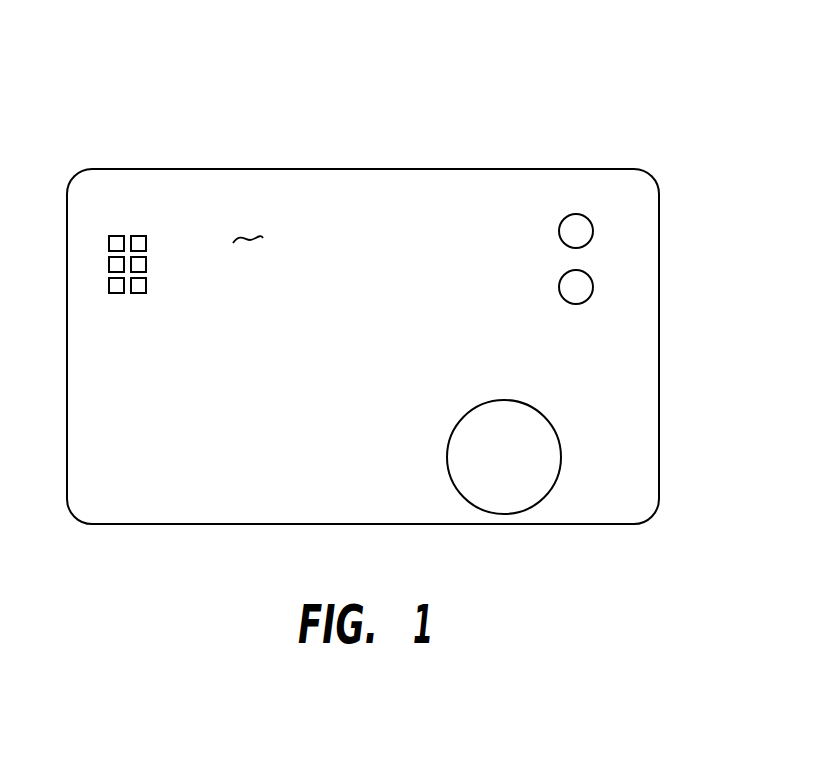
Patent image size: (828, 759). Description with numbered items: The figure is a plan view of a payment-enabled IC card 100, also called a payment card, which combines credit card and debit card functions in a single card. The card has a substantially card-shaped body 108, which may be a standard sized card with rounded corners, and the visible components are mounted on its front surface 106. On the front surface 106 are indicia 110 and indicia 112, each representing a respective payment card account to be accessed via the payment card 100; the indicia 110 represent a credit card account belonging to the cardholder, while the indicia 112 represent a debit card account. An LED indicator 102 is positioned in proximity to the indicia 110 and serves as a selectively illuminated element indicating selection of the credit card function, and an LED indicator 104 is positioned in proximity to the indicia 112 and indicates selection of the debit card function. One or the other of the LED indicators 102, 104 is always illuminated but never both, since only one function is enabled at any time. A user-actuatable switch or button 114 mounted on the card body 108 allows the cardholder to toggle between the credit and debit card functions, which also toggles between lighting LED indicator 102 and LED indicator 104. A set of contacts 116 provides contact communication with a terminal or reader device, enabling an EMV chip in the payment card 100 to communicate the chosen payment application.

The payment-enabled IC card 100 is at (246, 62).
The LED indicator 102 is at (593, 231).
The LED indicator 104 is at (593, 287).
The front surface 106 is at (249, 236).
The card-shaped body 108 is at (333, 169).
The indicia 110 is at (508, 181).
The indicia 112 is at (535, 313).
The user-actuatable switch or button 114 is at (561, 456).
The set of contacts 116 is at (109, 266).